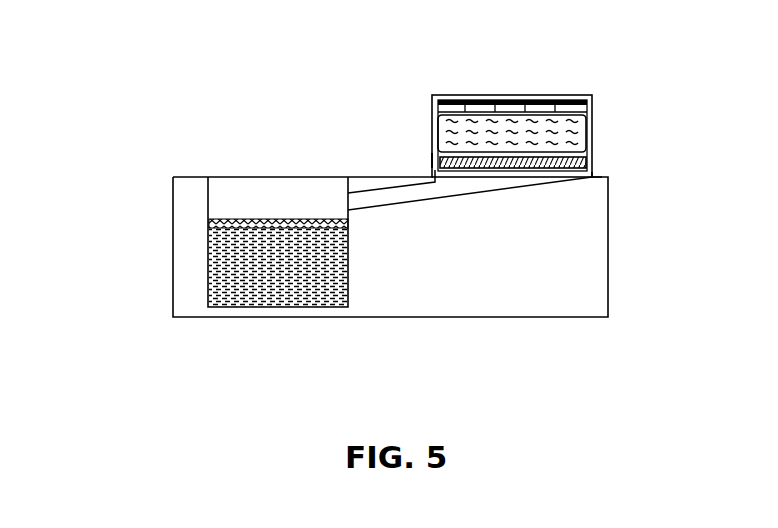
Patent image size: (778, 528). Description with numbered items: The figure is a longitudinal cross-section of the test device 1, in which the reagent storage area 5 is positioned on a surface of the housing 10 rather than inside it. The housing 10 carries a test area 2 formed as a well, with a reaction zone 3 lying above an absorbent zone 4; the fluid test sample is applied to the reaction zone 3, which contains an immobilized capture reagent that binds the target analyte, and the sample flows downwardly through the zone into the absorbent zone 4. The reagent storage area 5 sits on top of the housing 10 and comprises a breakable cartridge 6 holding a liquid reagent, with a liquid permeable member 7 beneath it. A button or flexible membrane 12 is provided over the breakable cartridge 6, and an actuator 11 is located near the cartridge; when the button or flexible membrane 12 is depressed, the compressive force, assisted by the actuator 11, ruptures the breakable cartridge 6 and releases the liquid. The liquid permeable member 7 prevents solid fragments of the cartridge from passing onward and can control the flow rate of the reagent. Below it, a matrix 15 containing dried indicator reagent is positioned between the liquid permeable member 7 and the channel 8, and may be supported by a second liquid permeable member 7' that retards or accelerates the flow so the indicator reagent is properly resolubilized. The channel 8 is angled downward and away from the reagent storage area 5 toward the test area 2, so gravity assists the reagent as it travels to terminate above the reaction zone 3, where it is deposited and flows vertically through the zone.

The test device 1 is at (163, 140).
The test area 2 is at (283, 193).
The reaction zone 3 is at (209, 221).
The absorbent zone 4 is at (209, 249).
The reagent storage area 5 is at (674, 105).
The breakable cartridge 6 is at (572, 128).
The liquid permeable member 7 is at (543, 151).
The second liquid permeable member 7' is at (405, 145).
The channel 8 is at (472, 183).
The housing 10 is at (579, 244).
The actuator 11 is at (590, 95).
The button or flexible membrane 12 is at (510, 95).
The matrix 15 is at (598, 177).